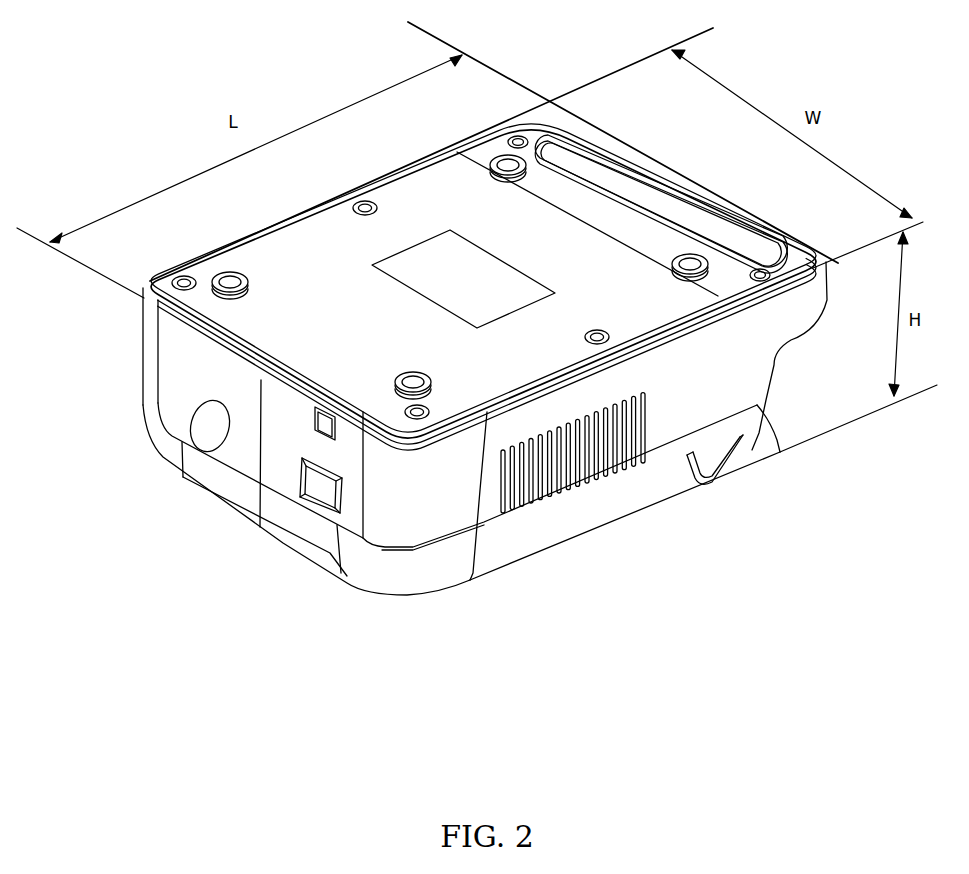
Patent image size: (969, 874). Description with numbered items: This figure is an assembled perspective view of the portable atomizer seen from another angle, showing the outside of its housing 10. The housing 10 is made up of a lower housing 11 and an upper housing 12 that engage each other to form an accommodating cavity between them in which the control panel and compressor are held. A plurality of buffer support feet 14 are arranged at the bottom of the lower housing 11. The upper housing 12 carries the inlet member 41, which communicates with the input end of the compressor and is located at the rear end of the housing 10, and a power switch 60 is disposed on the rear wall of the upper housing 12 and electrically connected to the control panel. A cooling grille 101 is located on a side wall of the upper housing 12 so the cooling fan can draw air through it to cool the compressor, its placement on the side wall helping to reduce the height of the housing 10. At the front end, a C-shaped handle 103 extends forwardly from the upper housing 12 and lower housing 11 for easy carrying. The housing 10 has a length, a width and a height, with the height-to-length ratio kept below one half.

The housing 10 is at (408, 219).
The lower housing 11 is at (302, 242).
The upper housing 12 is at (752, 362).
The buffer support feet 14 is at (233, 270).
The inlet member 41 is at (210, 430).
The power switch 60 is at (320, 488).
The cooling grille 101 is at (593, 470).
The handle 103 is at (670, 213).